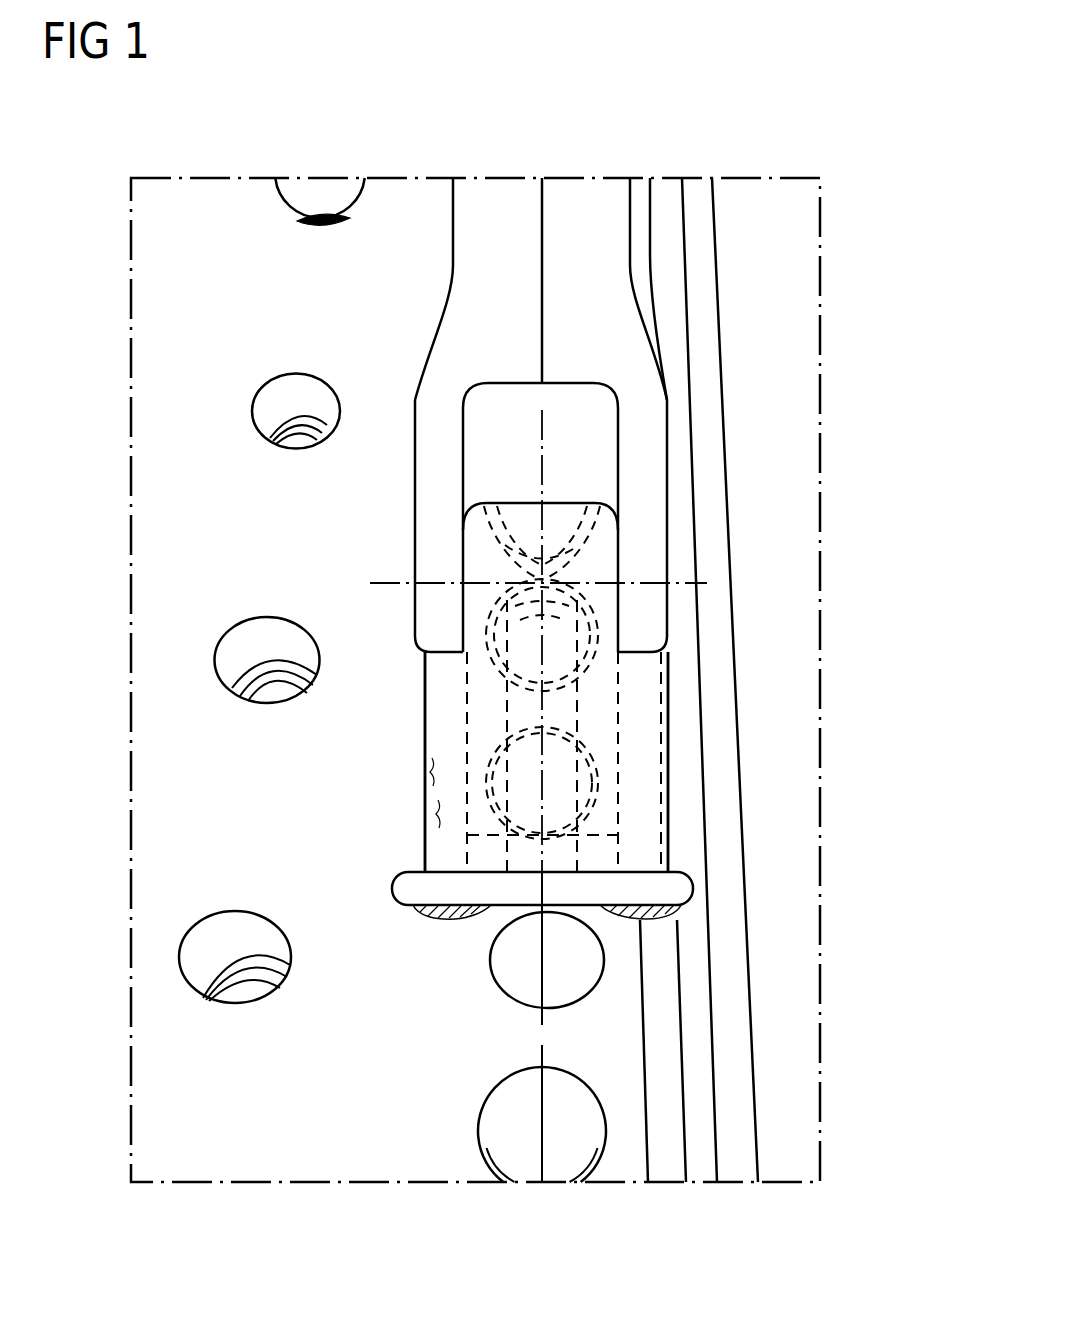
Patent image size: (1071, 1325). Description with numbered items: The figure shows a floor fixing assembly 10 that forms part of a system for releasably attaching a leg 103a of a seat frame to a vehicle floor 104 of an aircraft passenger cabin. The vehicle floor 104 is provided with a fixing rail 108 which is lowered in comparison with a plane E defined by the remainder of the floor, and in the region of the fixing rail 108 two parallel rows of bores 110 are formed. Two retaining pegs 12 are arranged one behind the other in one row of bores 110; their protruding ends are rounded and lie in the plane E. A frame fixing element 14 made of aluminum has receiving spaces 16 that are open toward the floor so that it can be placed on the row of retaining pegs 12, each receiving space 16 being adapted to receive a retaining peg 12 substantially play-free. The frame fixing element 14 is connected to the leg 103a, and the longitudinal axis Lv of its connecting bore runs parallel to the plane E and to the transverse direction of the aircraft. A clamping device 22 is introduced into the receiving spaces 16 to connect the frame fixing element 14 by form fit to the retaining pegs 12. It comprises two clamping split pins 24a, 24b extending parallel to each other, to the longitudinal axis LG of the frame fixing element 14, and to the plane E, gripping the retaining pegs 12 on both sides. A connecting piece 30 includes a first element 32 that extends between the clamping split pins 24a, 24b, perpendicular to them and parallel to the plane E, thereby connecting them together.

The floor fixing assembly 10 is at (728, 247).
The retaining peg 12 is at (590, 503).
The frame fixing element 14 is at (603, 713).
The receiving space 16 is at (503, 527).
The clamping device 22 is at (692, 893).
The clamping split pin 24a is at (442, 827).
The clamping split pin 24b is at (643, 847).
The connecting piece 30 is at (392, 912).
The first element 32 is at (527, 893).
The leg 103a is at (496, 190).
The vehicle floor 104 is at (723, 190).
The fixing rail 108 is at (194, 190).
The bore 110 is at (324, 190).
The plane E is at (797, 190).
The longitudinal axis of the connecting bore Lv is at (705, 583).
The longitudinal axis of the frame fixing element LG is at (547, 945).